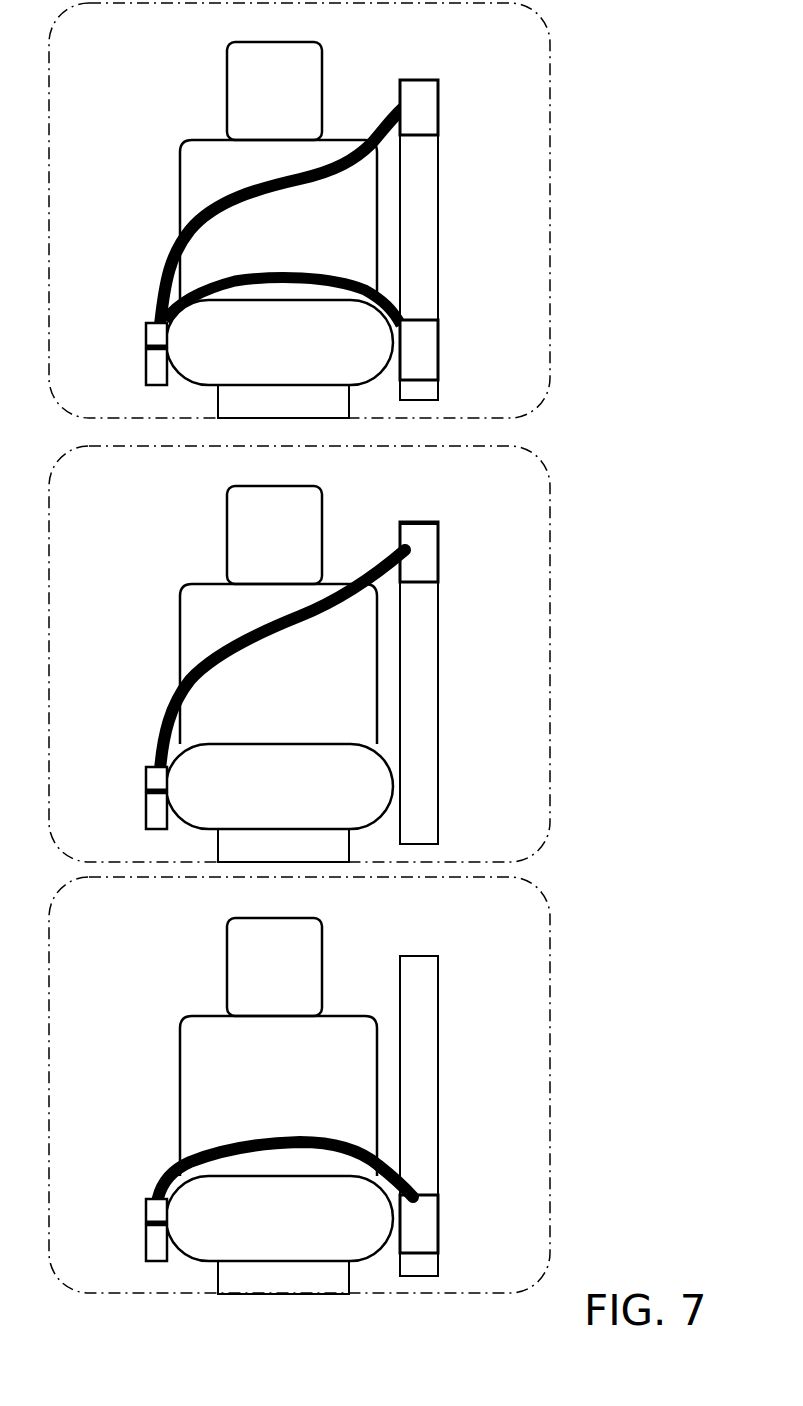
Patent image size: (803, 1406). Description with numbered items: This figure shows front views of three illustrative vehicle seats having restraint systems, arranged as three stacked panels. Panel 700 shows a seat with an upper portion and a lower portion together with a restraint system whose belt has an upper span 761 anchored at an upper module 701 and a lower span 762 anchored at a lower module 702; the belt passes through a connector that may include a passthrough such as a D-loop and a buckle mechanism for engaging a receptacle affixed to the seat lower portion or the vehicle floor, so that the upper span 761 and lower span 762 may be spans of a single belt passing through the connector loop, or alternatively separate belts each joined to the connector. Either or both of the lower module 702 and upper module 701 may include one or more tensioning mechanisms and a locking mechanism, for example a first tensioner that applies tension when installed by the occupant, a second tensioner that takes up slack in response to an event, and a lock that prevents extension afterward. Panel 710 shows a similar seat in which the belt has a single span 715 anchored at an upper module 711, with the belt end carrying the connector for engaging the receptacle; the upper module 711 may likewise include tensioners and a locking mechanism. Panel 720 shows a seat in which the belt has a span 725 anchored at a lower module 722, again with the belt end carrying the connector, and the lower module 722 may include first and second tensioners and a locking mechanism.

The panel 700 is at (168, 47).
The panel 710 is at (168, 491).
The panel 720 is at (168, 922).
The upper module 701 is at (438, 112).
The lower module 702 is at (438, 357).
The upper module 711 is at (438, 558).
The lower module 722 is at (438, 1232).
The span 715 is at (178, 690).
The span 725 is at (341, 1141).
The upper span 761 is at (178, 246).
The lower span 762 is at (341, 273).